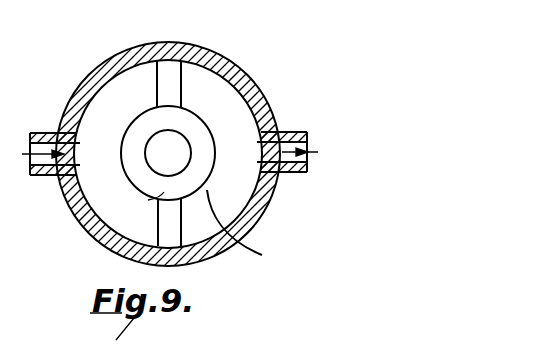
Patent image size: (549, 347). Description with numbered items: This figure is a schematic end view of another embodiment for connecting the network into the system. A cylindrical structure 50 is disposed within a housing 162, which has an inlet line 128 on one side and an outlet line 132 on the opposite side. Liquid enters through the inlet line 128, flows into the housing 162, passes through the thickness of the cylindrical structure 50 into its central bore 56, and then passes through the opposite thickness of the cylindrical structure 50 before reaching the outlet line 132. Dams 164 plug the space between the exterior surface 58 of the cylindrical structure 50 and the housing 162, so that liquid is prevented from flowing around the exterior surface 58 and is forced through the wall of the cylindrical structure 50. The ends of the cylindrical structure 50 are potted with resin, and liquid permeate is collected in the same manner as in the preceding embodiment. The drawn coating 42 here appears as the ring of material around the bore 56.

The housing 162 is at (232, 82).
The continuous coating 42 is at (204, 130).
The bore 56 is at (148, 157).
The dams 164 is at (168, 76).
The exterior surface 58 is at (148, 200).
The cylindrical structure 50 is at (246, 228).
The inlet line 128 is at (48, 176).
The outlet line 132 is at (290, 173).